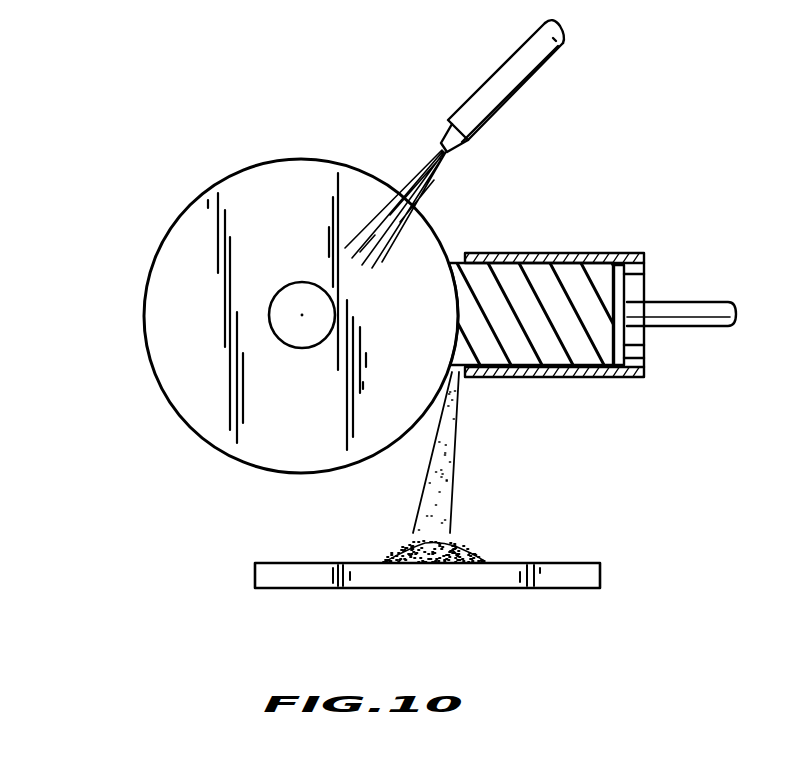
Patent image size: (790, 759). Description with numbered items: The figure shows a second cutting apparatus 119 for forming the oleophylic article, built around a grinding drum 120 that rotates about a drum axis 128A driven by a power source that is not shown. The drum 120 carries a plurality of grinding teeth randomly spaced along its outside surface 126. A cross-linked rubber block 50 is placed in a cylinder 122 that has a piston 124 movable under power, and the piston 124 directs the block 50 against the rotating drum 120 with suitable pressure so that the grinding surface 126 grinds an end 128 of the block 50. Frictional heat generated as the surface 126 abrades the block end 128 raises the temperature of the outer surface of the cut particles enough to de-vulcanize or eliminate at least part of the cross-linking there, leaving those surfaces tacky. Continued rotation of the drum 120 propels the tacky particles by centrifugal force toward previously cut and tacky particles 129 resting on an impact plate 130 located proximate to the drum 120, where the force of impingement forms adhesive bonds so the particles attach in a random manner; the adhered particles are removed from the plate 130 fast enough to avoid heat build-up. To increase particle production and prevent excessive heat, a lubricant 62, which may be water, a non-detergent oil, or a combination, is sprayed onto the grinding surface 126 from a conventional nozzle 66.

The cutting apparatus 119 is at (250, 280).
The grinding drum 120 is at (288, 180).
The outside surface 126 is at (312, 158).
The drum axis 128A is at (272, 332).
The nozzle 66 is at (552, 74).
The lubricant 62 is at (450, 178).
The cylinder 122 is at (615, 253).
The cross-linked rubber block 50 is at (553, 355).
The piston 124 is at (620, 340).
The end of block 128 is at (461, 382).
The previously cut and tacky particles 129 is at (410, 550).
The impact plate 130 is at (567, 562).